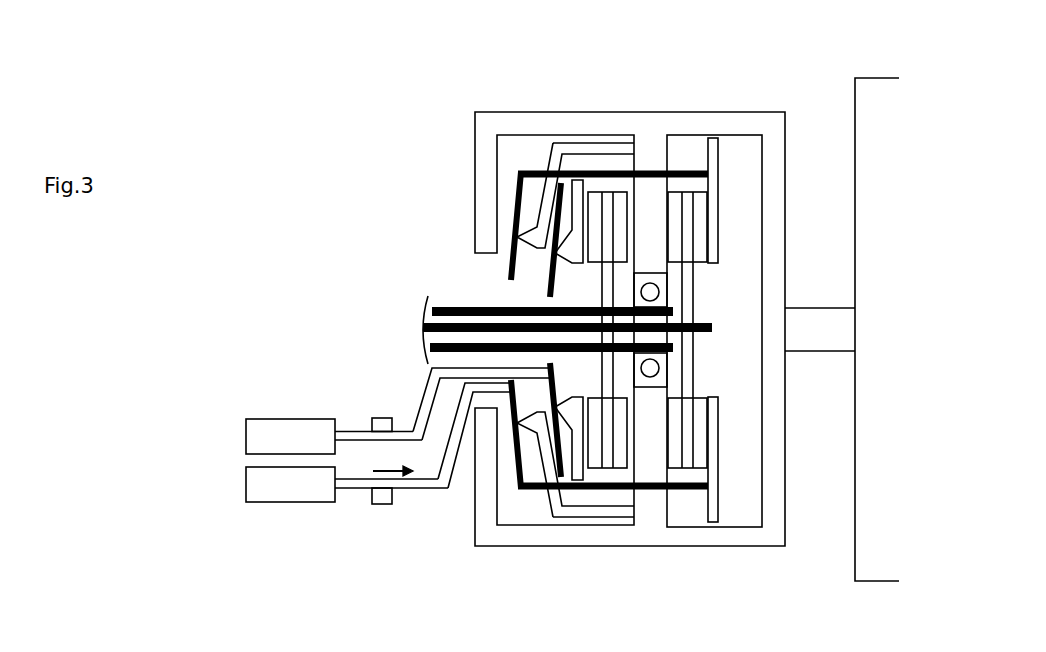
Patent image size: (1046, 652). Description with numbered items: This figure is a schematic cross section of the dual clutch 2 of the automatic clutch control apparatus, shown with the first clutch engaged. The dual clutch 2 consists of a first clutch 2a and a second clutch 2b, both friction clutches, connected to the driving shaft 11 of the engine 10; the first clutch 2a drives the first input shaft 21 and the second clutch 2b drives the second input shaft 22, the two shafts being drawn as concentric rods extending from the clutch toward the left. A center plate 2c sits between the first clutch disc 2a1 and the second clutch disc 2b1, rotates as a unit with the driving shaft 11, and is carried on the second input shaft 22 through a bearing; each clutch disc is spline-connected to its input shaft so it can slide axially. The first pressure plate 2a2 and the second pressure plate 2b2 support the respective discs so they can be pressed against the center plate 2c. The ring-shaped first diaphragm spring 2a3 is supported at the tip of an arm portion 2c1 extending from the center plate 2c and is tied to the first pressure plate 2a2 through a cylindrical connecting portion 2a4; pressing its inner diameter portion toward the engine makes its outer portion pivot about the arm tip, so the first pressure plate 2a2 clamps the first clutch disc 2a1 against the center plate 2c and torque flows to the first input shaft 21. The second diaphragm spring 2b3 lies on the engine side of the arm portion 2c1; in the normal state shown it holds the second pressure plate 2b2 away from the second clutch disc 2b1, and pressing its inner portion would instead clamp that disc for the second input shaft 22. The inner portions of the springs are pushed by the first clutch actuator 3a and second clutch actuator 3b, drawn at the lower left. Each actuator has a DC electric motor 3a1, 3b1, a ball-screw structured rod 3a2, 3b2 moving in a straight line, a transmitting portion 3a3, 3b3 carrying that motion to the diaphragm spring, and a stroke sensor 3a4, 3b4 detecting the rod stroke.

The dual clutch 2 is at (683, 57).
The first clutch 2a is at (722, 106).
The first clutch disc 2a1 is at (687, 418).
The first pressure plate 2a2 is at (713, 450).
The first diaphragm spring 2a3 is at (514, 452).
The connecting portion 2a4 is at (533, 491).
The second clutch 2b is at (583, 108).
The second clutch disc 2b1 is at (608, 445).
The second pressure plate 2b2 is at (580, 470).
The second diaphragm spring 2b3 is at (548, 396).
The center plate 2c is at (643, 160).
The arm portion 2c1 is at (557, 157).
The first input shaft 21 is at (427, 330).
The second input shaft 22 is at (460, 308).
The driving shaft 11 is at (799, 319).
The engine 10 is at (869, 544).
The first clutch actuator 3a is at (283, 538).
The DC electric motor 3a1 is at (295, 492).
The ball-screw structured rod 3a2 is at (367, 485).
The transmitting portion 3a3 is at (421, 432).
The stroke sensor 3a4 is at (377, 505).
The second clutch actuator 3b is at (285, 390).
The DC electric motor 3b1 is at (297, 430).
The ball-screw structured rod 3b2 is at (367, 437).
The transmitting portion 3b3 is at (453, 437).
The stroke sensor 3b4 is at (381, 417).